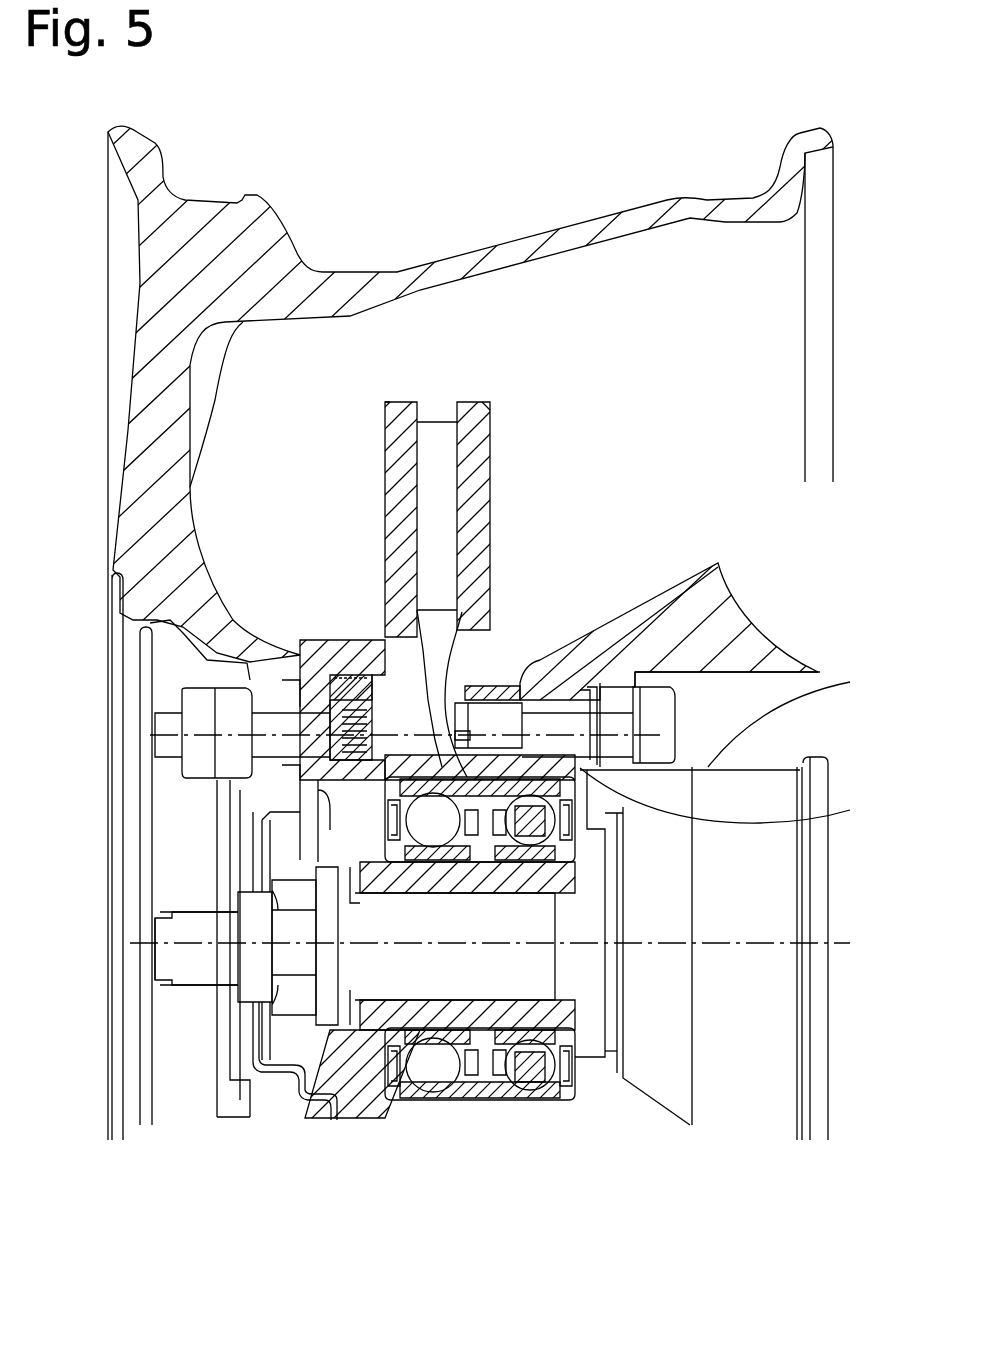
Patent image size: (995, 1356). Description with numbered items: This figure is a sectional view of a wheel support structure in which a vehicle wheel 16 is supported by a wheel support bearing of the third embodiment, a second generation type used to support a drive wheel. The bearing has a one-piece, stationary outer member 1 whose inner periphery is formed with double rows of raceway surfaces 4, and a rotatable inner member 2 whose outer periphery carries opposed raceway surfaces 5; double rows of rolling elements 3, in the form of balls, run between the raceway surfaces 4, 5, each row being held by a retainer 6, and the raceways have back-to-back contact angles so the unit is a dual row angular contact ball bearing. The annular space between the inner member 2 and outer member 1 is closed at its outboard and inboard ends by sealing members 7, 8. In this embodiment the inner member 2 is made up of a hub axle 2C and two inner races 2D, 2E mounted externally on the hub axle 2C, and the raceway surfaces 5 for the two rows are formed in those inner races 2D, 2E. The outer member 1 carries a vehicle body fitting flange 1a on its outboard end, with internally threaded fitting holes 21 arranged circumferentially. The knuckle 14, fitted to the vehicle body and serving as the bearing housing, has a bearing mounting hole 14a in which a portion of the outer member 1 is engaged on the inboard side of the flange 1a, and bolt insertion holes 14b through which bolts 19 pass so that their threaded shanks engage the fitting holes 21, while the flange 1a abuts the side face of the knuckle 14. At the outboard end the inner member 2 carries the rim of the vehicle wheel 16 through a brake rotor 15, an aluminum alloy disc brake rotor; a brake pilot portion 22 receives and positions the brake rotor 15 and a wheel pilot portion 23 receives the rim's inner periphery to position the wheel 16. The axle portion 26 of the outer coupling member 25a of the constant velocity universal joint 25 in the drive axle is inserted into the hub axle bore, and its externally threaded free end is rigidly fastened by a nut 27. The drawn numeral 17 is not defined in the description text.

The outer member 1 is at (420, 700).
The vehicle body fitting flange 1a is at (347, 673).
The inner member 2 is at (173, 952).
The hub axle 2C is at (257, 920).
The inner race 2D is at (347, 943).
The inner race 2E is at (333, 967).
The rolling elements 3 is at (428, 1088).
The raceway surfaces 4 is at (440, 1082).
The raceway surfaces 5 is at (417, 1100).
The retainer 6 is at (455, 1068).
The sealing member 7 is at (383, 1100).
The sealing member 8 is at (563, 1100).
The knuckle 14 is at (697, 613).
The bearing mounting hole 14a is at (742, 798).
The bolt insertion holes 14b is at (597, 700).
The brake rotor 15 is at (470, 440).
The vehicle wheel 16 is at (150, 380).
The brake rotor 17 is at (293, 663).
The bolts 19 is at (440, 585).
The fitting holes 21 is at (480, 717).
The brake pilot portion 22 is at (317, 847).
The wheel pilot portion 23 is at (333, 847).
The constant velocity universal joint 25 is at (757, 1055).
The outer coupling member 25a is at (667, 1073).
The axle portion 26 is at (317, 1130).
The nut 27 is at (293, 1003).